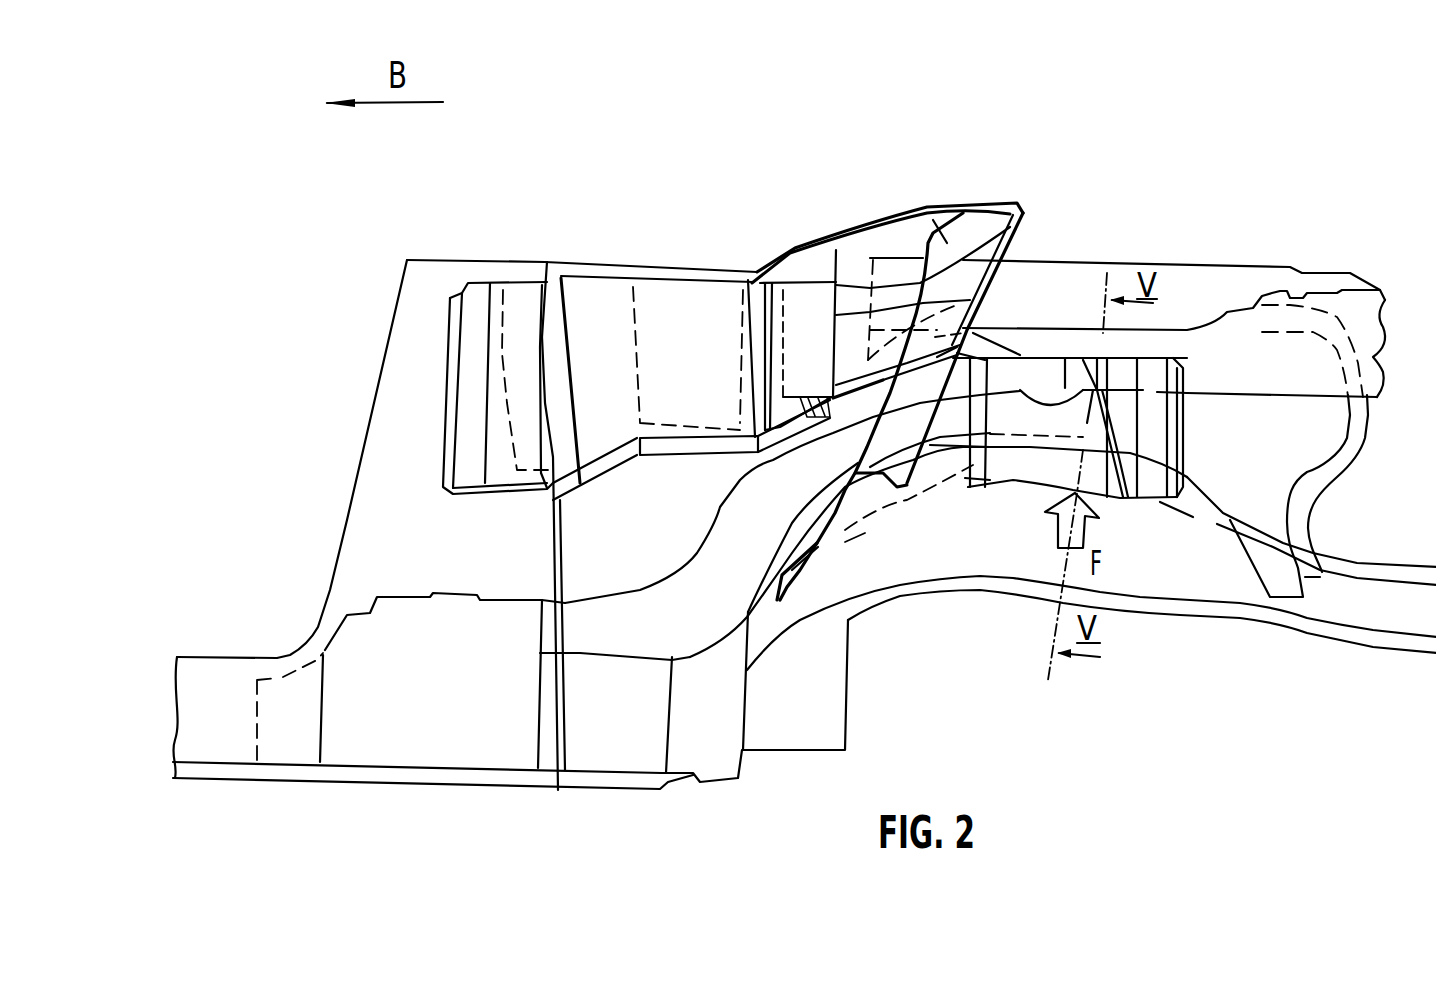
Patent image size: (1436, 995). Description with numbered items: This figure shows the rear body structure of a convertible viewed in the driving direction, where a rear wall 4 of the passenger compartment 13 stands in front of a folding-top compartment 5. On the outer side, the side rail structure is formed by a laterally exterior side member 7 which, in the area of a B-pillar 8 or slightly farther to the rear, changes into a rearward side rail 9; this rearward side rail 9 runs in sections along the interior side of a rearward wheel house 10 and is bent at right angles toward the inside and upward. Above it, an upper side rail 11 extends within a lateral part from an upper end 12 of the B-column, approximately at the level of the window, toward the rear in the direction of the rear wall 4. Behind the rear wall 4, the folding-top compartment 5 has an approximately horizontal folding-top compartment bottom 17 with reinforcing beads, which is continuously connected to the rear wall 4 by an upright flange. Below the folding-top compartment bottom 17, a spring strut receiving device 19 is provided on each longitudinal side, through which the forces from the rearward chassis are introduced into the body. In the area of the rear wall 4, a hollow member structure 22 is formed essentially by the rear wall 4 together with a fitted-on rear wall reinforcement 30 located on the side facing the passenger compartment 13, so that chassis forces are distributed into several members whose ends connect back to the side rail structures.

The rear wall 4 is at (925, 433).
The folding-top compartment 5 is at (1236, 250).
The side member 7 is at (210, 730).
The B-pillar 8 is at (373, 397).
The rearward side rail 9 is at (1350, 603).
The rearward wheel house 10 is at (737, 503).
The upper side rail 11 is at (685, 307).
The upper end of the B-column 12 is at (480, 255).
The passenger compartment 13 is at (282, 490).
The folding-top compartment bottom 17 is at (1043, 360).
The spring strut receiving device 19 is at (1195, 428).
The hollow member structure 22 is at (860, 430).
The rear wall reinforcement 30 is at (940, 228).